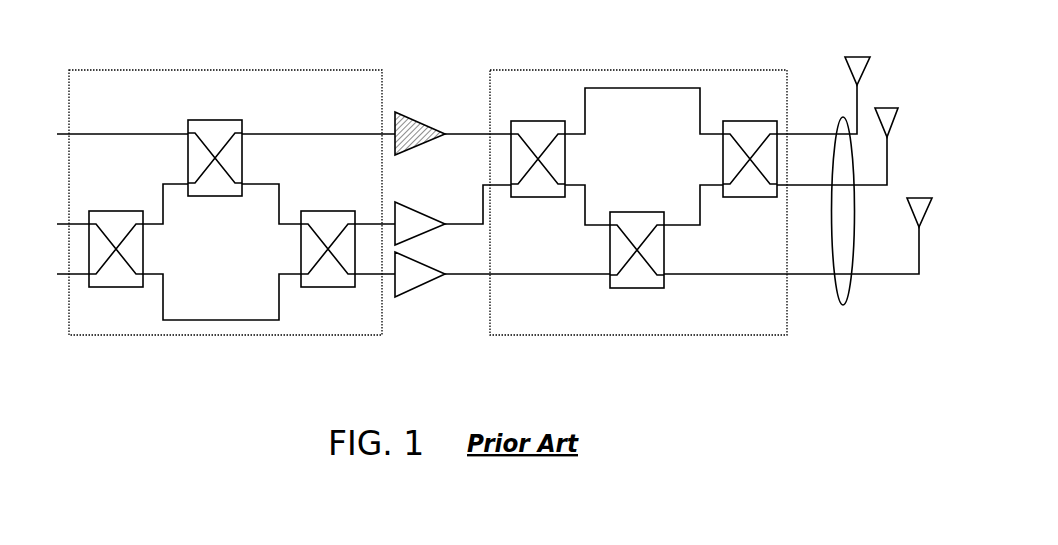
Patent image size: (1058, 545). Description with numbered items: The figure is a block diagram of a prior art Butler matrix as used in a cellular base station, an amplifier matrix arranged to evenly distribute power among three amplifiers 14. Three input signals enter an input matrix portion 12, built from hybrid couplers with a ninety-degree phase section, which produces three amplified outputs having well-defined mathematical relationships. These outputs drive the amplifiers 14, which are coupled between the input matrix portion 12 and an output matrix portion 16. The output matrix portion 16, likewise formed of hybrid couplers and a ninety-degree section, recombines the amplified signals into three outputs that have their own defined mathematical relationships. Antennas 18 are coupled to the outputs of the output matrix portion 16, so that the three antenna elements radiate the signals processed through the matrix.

The input matrix portion 12 is at (143, 71).
The amplifiers 14 is at (407, 110).
The output matrix portion 16 is at (597, 71).
The antennas 18 is at (843, 305).